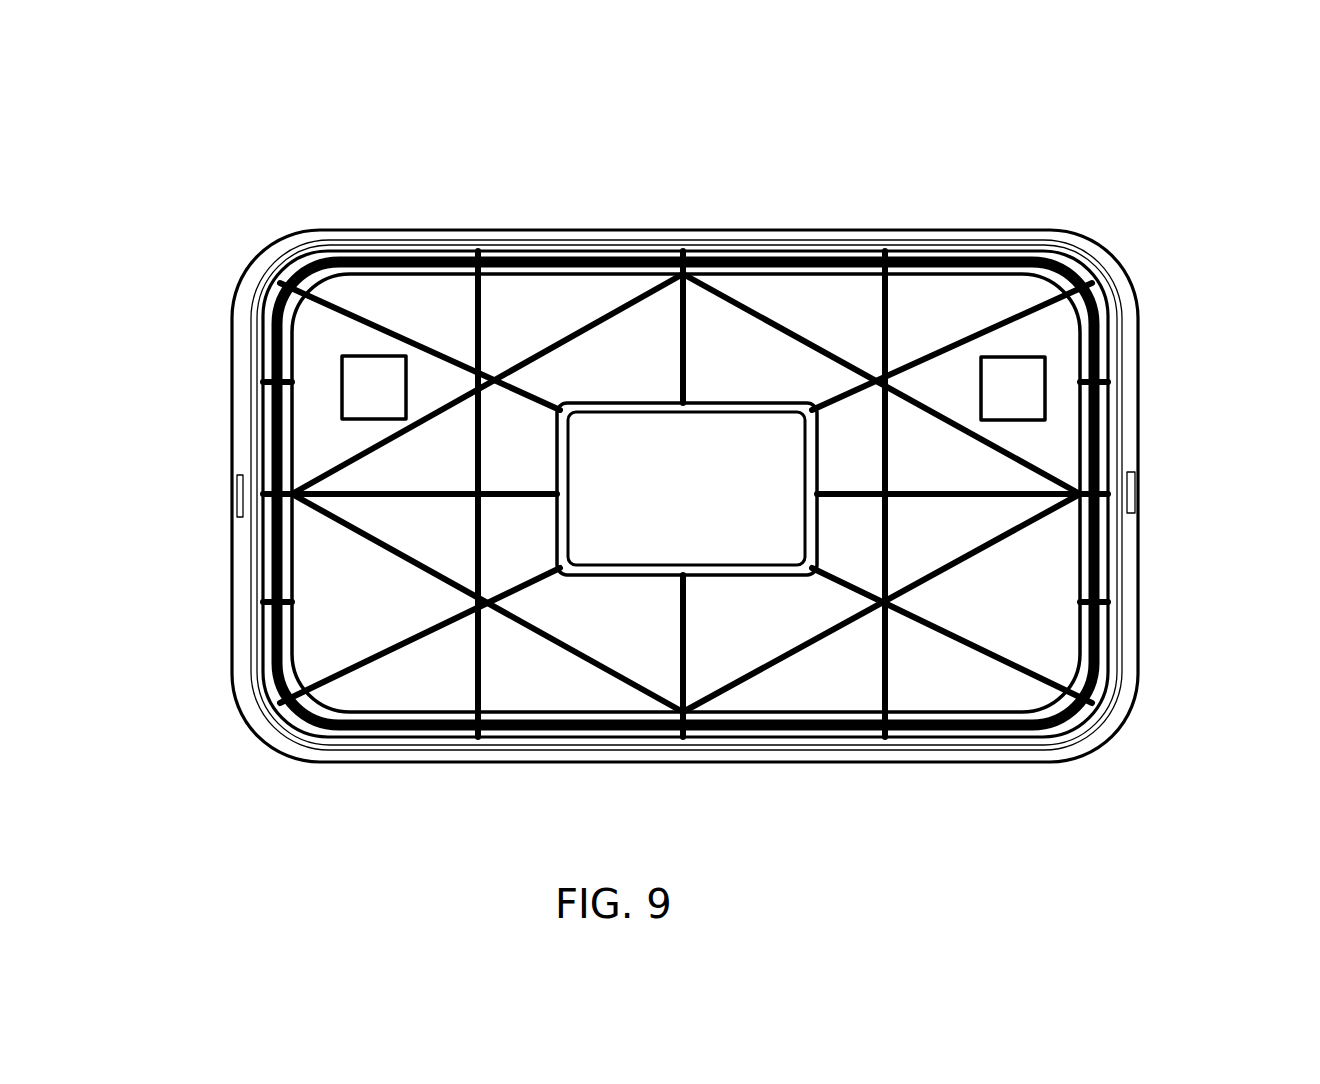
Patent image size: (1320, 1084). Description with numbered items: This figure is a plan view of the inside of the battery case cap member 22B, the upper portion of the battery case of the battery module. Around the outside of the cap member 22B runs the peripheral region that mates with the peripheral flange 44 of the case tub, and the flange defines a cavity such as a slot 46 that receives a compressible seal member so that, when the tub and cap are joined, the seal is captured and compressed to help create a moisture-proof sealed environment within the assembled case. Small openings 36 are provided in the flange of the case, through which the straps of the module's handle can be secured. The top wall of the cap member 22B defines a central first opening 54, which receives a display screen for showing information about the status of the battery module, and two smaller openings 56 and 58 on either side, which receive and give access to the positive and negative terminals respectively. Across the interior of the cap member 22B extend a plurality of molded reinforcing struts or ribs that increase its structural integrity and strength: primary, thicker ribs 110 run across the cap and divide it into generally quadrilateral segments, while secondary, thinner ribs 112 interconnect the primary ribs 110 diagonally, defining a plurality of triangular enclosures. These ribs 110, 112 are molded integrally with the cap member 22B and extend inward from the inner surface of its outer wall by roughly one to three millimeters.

The cap member 22B is at (718, 118).
The peripheral flange 44 is at (240, 288).
The slot 46 is at (302, 247).
The openings 36 is at (235, 496).
The first opening 54 is at (692, 511).
The opening 56 is at (1045, 380).
The opening 58 is at (340, 391).
The primary ribs 110 is at (887, 265).
The secondary ribs 112 is at (615, 260).